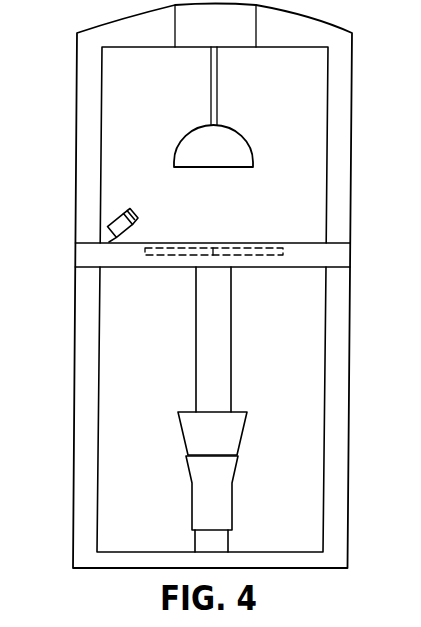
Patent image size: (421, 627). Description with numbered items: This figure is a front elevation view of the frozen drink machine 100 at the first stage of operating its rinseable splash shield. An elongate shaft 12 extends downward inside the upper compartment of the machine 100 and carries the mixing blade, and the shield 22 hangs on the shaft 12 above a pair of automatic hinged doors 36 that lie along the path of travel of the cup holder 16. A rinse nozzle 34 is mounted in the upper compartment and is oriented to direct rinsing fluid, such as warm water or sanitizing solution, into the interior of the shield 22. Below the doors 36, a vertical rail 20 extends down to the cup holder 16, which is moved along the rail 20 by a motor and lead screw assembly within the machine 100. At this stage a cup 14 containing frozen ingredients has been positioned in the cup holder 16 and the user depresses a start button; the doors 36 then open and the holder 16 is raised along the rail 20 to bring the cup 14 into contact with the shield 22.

The machine 100 is at (352, 172).
The elongate shaft 12 is at (212, 80).
The shield 22 is at (190, 143).
The rinse nozzle 34 is at (111, 222).
The hinged doors 36 is at (258, 250).
The vertical rail 20 is at (223, 328).
The cup 14 is at (245, 432).
The cup holder 16 is at (232, 495).